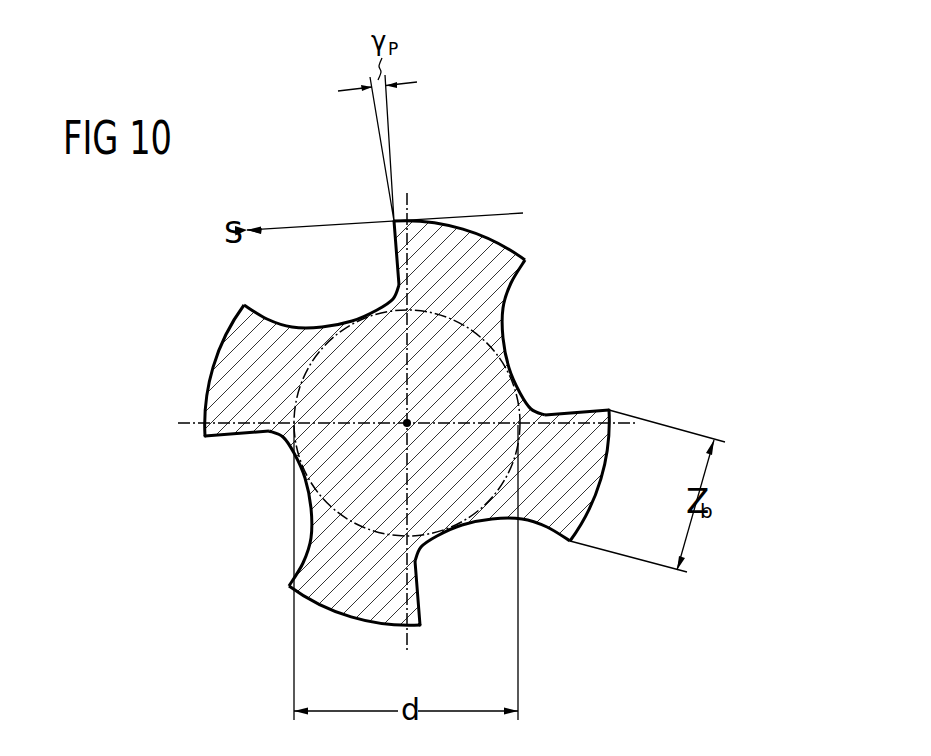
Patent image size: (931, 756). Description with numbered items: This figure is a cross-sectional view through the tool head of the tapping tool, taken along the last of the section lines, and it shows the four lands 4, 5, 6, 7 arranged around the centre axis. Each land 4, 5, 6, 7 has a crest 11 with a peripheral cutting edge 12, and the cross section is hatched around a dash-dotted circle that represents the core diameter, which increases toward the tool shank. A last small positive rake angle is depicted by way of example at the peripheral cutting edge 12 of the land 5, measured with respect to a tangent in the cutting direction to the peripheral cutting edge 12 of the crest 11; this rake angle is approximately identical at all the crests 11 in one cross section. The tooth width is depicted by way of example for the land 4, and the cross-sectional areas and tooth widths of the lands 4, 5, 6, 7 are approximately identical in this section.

The land 4 is at (542, 430).
The land 5 is at (508, 275).
The land 6 is at (238, 333).
The land 7 is at (405, 562).
The crest 11 is at (515, 252).
The peripheral cutting edge 12 is at (390, 223).